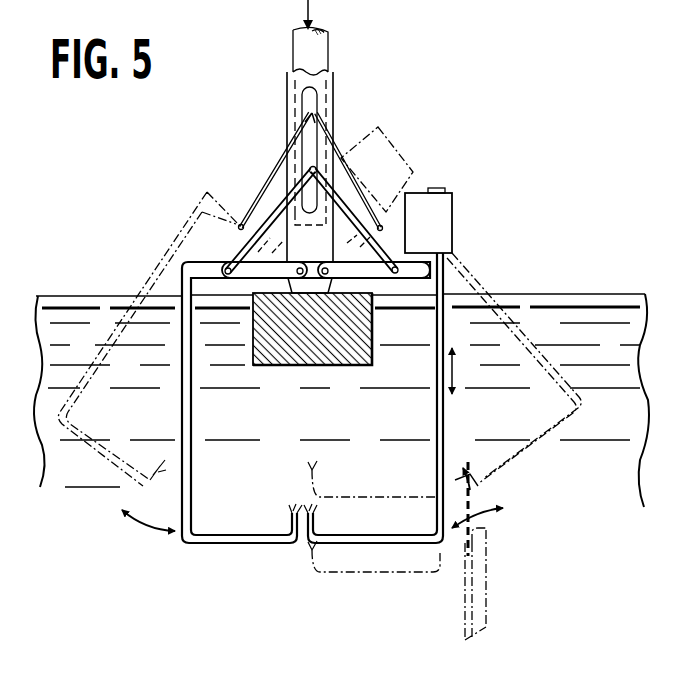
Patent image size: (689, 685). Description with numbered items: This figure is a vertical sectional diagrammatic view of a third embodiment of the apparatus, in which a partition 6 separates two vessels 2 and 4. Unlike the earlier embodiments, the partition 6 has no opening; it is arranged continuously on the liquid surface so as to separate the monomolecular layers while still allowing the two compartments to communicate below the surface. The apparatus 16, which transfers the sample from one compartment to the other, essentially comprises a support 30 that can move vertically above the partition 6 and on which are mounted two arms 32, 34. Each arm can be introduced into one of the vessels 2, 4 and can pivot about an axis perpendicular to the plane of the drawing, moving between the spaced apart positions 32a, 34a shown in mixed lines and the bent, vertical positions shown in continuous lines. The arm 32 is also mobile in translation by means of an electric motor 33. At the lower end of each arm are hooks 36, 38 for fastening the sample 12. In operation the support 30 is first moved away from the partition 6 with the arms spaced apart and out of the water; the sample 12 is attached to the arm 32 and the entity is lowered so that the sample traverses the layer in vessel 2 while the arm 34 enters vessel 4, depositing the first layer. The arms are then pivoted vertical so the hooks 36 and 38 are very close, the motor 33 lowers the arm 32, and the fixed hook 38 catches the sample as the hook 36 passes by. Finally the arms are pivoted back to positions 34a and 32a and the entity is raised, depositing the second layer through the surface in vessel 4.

The vessel 2 is at (586, 297).
The vessel 4 is at (90, 303).
The partition 6 is at (338, 342).
The sample 12 is at (489, 582).
The apparatus 16 is at (344, 65).
The support 30 is at (332, 105).
The arm 32 is at (442, 283).
The spaced apart position of arm 32a is at (527, 450).
The electric motor 33 is at (438, 212).
The arm 34 is at (190, 442).
The spaced apart position of arm 34a is at (110, 463).
The hook 36 is at (313, 514).
The hook 38 is at (292, 515).